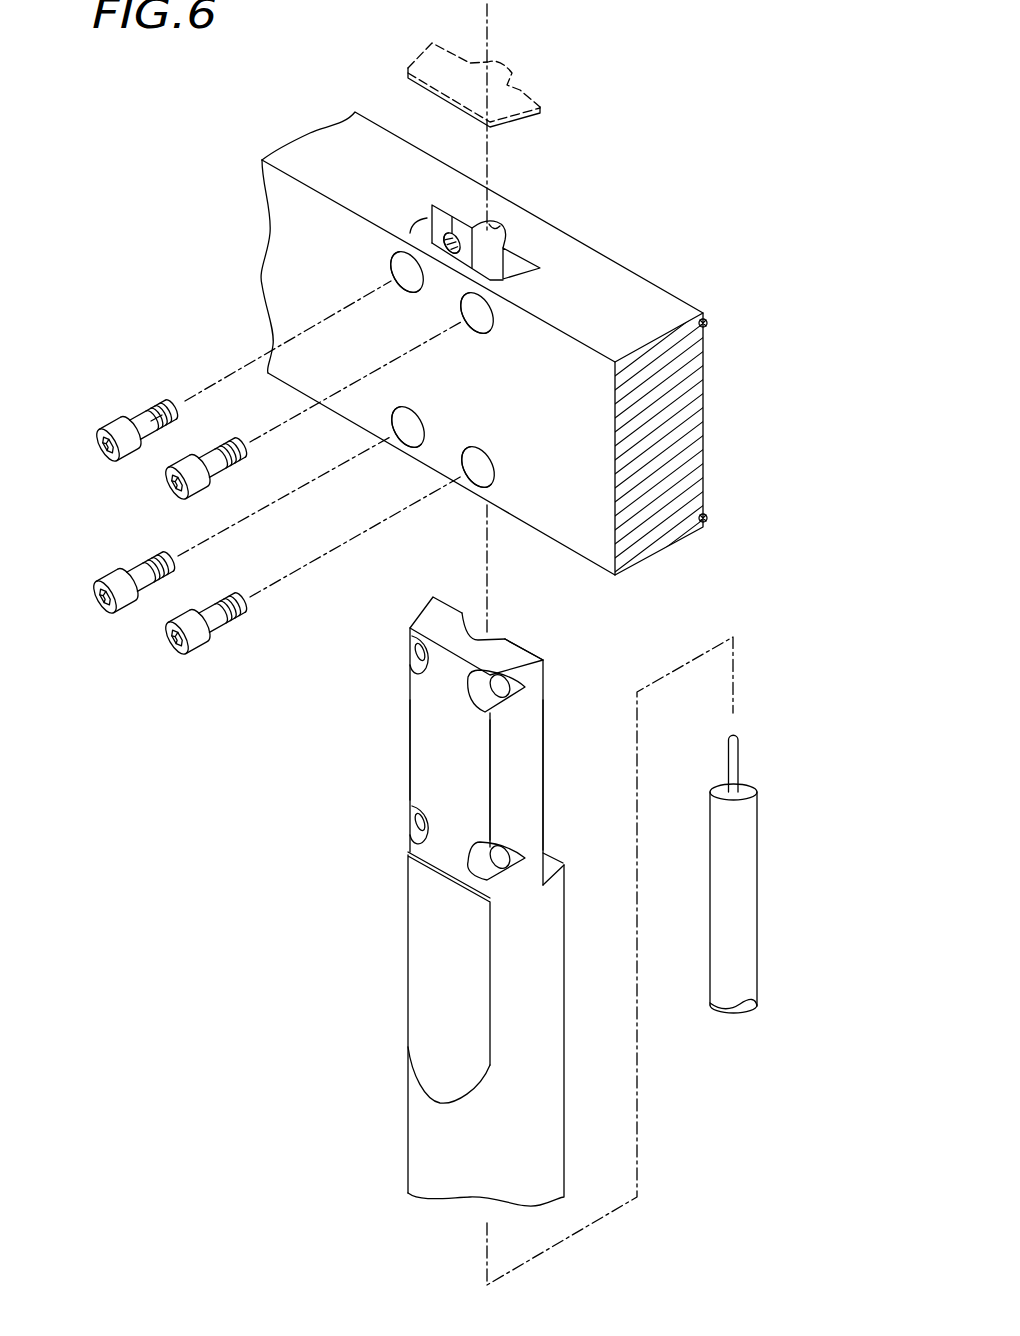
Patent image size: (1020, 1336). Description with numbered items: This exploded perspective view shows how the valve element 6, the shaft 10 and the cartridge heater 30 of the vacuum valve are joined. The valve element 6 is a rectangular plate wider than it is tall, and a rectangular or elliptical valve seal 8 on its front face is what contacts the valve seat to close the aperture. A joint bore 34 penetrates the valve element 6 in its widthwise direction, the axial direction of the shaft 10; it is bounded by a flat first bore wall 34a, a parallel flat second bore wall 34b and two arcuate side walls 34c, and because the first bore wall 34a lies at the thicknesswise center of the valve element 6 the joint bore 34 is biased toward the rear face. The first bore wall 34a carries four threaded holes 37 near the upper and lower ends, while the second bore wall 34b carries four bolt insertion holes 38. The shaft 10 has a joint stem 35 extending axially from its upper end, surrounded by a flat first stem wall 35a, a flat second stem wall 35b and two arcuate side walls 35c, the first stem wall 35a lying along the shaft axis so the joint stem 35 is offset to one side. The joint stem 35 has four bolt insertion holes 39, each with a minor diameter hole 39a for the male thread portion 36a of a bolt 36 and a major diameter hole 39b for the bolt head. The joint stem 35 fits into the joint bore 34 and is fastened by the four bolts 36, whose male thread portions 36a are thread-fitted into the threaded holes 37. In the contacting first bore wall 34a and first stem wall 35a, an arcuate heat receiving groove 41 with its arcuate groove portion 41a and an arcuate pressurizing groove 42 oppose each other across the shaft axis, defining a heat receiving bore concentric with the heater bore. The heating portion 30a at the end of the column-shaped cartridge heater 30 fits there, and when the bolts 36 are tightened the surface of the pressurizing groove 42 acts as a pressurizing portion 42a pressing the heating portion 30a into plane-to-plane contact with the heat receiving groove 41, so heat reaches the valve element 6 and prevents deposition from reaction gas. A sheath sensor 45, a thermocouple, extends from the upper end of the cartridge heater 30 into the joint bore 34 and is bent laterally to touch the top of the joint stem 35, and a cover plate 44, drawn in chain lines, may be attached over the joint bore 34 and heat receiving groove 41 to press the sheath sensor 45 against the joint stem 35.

The valve element 6 is at (307, 153).
The valve seal 8 is at (708, 322).
The shaft 10 is at (440, 1138).
The cartridge heater 30 is at (777, 909).
The heating portion 30a is at (735, 883).
The joint bore 34 is at (434, 173).
The first bore wall 34a is at (510, 263).
The second bore wall 34b is at (420, 216).
The arcuate side walls 34c is at (410, 228).
The joint stem 35 is at (449, 742).
The first stem wall 35a is at (523, 645).
The second stem wall 35b is at (428, 748).
The arcuate side walls 35c is at (420, 607).
The bolts 36 is at (112, 425).
The male thread portion 36a is at (160, 416).
The threaded holes 37 is at (451, 231).
The bolt insertion holes 38 is at (390, 268).
The bolt insertion holes 39 is at (449, 797).
The minor diameter holes 39a is at (467, 758).
The major diameter holes 39b is at (463, 757).
The heat receiving groove 41 is at (535, 196).
The arcuate groove portion 41a is at (500, 228).
The pressurizing groove 42 is at (463, 572).
The pressurizing portion 42a is at (473, 627).
The cover plate 44 is at (517, 97).
The sheath sensor 45 is at (735, 762).